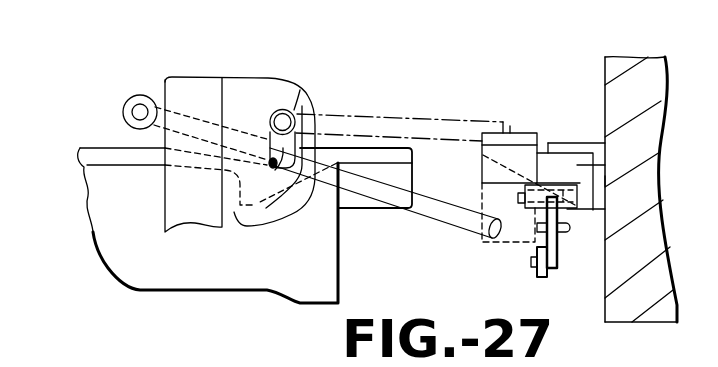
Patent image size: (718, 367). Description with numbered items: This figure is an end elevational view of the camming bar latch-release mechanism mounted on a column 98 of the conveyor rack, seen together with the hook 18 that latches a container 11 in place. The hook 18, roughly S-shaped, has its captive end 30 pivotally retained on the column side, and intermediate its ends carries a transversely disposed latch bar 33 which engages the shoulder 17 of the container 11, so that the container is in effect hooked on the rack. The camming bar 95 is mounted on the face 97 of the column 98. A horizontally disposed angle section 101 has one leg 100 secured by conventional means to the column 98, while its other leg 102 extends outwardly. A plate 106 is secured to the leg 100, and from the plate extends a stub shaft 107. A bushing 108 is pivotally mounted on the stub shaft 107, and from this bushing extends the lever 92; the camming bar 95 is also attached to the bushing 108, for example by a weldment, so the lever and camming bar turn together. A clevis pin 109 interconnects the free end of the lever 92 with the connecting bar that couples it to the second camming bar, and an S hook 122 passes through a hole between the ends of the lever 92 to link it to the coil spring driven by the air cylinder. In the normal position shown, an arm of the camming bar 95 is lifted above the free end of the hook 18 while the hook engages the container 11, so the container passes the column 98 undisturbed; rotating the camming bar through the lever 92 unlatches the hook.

The container 11 is at (118, 178).
The captive end 30 is at (142, 110).
The shoulder 17 is at (268, 150).
The latch bar 33 is at (256, 226).
The hook 18 is at (422, 117).
The camming bar 95 is at (492, 145).
The leg 102 is at (575, 143).
The angle section 101 is at (605, 141).
The plate 106 is at (605, 181).
The leg 100 is at (598, 180).
The stub shaft 107 is at (518, 197).
The bushing 108 is at (541, 204).
The clevis pin 109 is at (531, 262).
The S hook 122 is at (568, 232).
The lever 92 is at (560, 250).
The face 97 is at (605, 293).
The column 98 is at (605, 310).